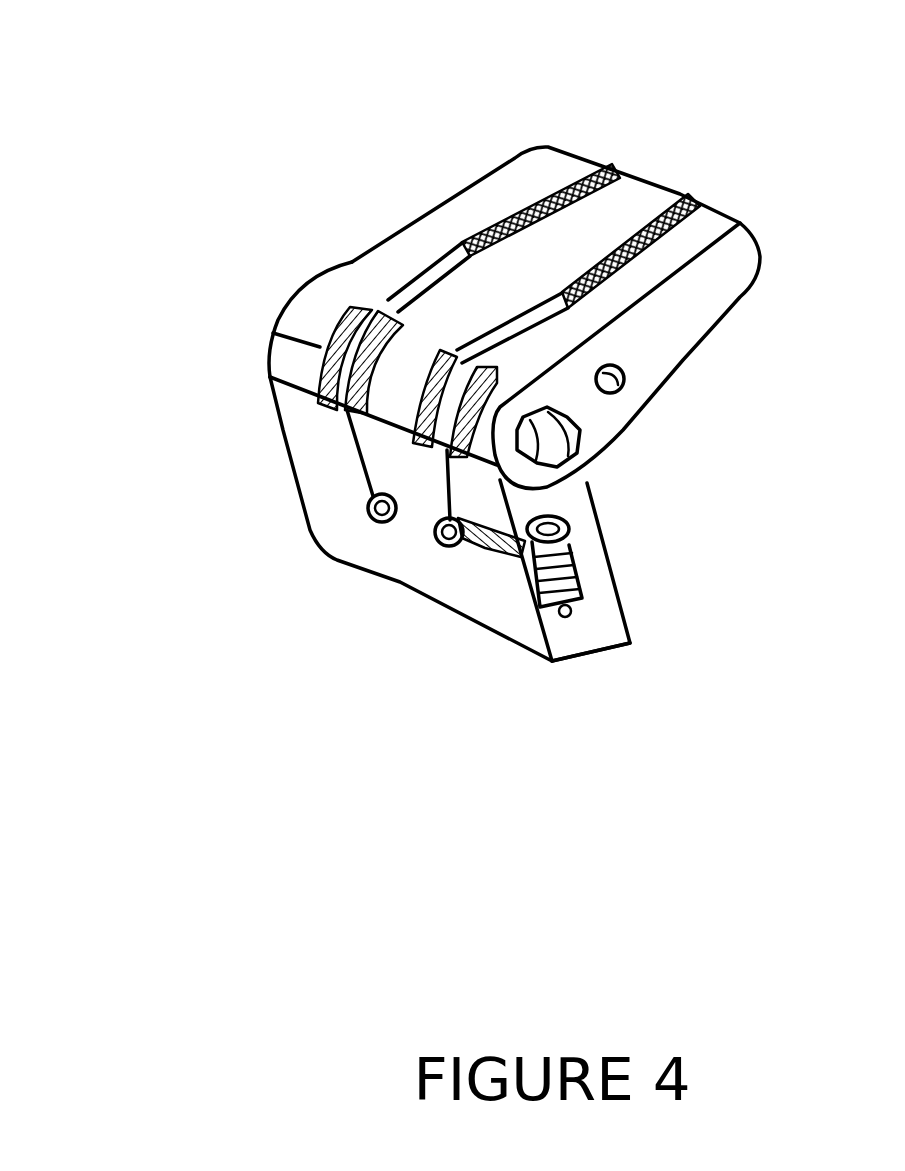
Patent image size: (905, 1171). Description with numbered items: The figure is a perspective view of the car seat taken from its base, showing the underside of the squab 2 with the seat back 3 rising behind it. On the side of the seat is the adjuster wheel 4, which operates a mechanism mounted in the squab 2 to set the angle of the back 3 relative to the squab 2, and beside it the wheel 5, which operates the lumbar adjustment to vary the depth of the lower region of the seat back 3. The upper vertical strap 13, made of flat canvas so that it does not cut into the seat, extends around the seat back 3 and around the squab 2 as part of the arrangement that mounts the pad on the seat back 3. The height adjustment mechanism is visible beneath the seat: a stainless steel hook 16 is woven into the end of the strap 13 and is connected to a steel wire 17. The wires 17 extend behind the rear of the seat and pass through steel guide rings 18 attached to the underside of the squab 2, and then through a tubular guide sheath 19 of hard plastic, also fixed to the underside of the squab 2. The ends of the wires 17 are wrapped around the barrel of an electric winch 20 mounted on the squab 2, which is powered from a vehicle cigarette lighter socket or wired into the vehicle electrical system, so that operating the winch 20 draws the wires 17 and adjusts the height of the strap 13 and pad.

The squab 2 is at (605, 628).
The back 3 is at (743, 257).
The adjuster wheel 4 is at (567, 447).
The wheel 5 is at (627, 373).
The upper vertical strap 13 is at (550, 190).
The hook 16 is at (467, 245).
The wire 17 is at (392, 294).
The guide ring 18 is at (368, 510).
The tubular guide sheath 19 is at (490, 556).
The electric winch 20 is at (572, 568).